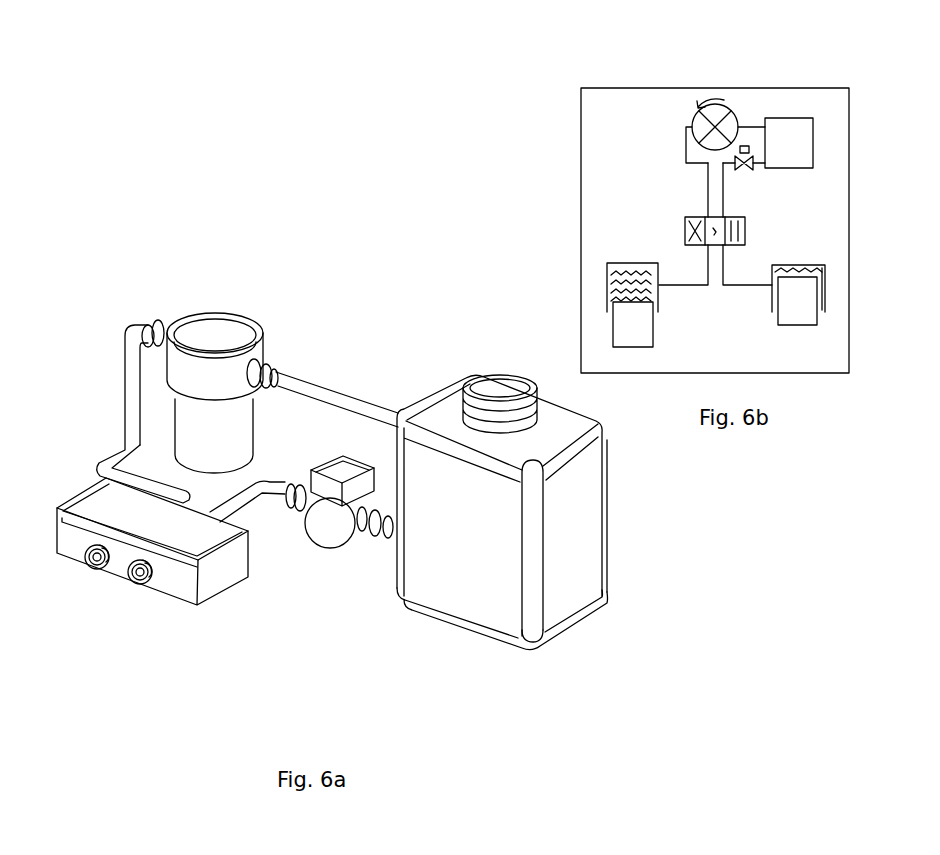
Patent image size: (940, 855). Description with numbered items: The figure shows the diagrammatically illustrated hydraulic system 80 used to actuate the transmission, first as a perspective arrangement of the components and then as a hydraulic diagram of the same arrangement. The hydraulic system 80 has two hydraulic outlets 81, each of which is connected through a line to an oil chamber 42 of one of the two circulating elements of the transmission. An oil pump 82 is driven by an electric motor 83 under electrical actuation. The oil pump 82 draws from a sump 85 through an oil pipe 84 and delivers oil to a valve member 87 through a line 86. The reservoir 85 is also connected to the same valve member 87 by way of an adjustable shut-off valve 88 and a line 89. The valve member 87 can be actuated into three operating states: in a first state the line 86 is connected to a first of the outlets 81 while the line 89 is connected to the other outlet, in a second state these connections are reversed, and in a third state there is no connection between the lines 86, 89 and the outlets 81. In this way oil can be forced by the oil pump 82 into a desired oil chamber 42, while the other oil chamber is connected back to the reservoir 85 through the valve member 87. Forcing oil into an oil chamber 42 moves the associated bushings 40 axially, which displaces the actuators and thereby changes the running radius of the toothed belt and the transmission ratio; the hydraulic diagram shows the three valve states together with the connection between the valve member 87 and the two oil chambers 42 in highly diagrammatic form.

In FIG. 6A, the hydraulic system 80 is at (175, 257).
In FIG. 6A, the hydraulic outlets 81 is at (83, 567).
In FIG. 6A, the oil pump 82 is at (218, 334).
In FIG. 6B, the oil pump 82 is at (724, 116).
In FIG. 6A, the electric motor 83 is at (215, 393).
In FIG. 6A, the oil pipe 84 is at (325, 397).
In FIG. 6B, the oil pipe 84 is at (756, 127).
In FIG. 6A, the sump 85 is at (502, 512).
In FIG. 6B, the sump 85 is at (805, 152).
In FIG. 6A, the line 86 is at (121, 383).
In FIG. 6B, the line 86 is at (688, 162).
In FIG. 6A, the valve member 87 is at (226, 577).
In FIG. 6B, the valve member 87 is at (766, 234).
In FIG. 6A, the adjustable shut-off valve 88 is at (349, 537).
In FIG. 6B, the adjustable shut-off valve 88 is at (755, 175).
In FIG. 6A, the line 89 is at (257, 507).
In FIG. 6B, the line 89 is at (726, 197).
In FIG. 6B, the oil chamber 42 is at (616, 284).
In FIG. 6B, the bushings 40 is at (623, 334).